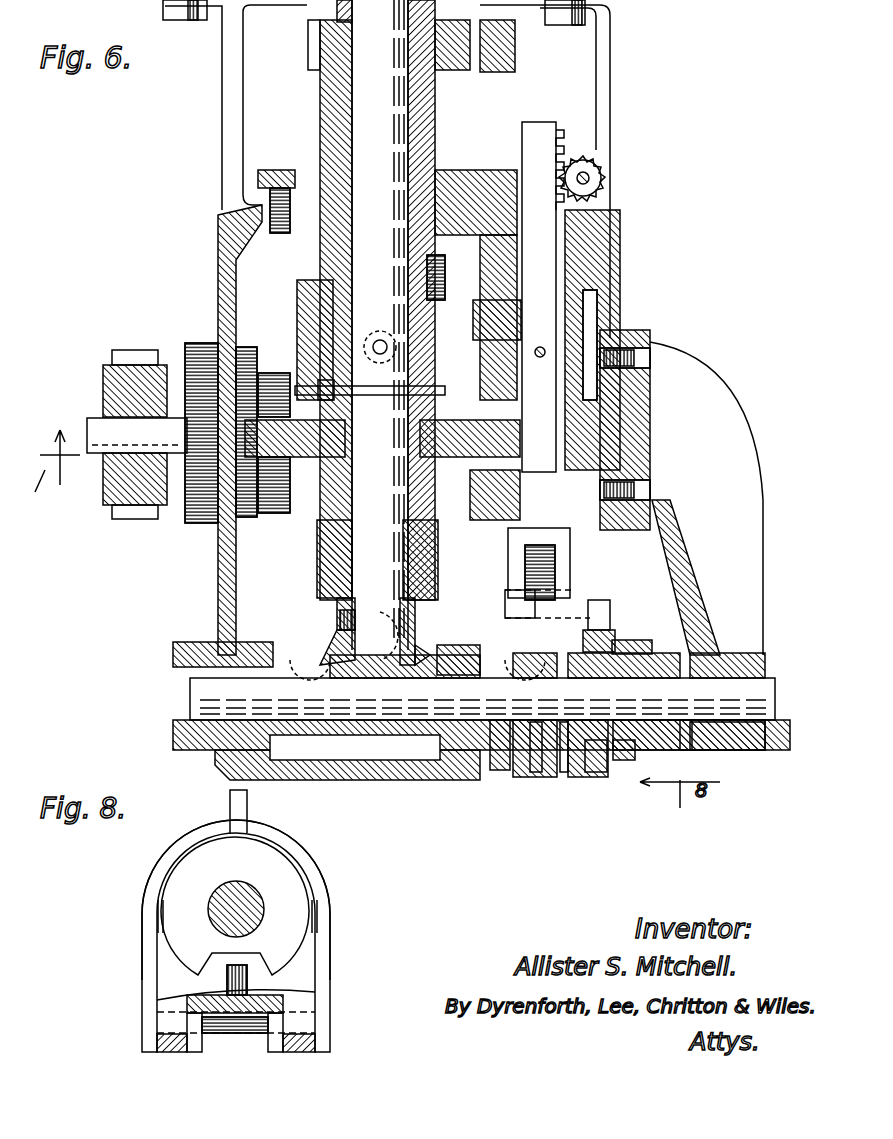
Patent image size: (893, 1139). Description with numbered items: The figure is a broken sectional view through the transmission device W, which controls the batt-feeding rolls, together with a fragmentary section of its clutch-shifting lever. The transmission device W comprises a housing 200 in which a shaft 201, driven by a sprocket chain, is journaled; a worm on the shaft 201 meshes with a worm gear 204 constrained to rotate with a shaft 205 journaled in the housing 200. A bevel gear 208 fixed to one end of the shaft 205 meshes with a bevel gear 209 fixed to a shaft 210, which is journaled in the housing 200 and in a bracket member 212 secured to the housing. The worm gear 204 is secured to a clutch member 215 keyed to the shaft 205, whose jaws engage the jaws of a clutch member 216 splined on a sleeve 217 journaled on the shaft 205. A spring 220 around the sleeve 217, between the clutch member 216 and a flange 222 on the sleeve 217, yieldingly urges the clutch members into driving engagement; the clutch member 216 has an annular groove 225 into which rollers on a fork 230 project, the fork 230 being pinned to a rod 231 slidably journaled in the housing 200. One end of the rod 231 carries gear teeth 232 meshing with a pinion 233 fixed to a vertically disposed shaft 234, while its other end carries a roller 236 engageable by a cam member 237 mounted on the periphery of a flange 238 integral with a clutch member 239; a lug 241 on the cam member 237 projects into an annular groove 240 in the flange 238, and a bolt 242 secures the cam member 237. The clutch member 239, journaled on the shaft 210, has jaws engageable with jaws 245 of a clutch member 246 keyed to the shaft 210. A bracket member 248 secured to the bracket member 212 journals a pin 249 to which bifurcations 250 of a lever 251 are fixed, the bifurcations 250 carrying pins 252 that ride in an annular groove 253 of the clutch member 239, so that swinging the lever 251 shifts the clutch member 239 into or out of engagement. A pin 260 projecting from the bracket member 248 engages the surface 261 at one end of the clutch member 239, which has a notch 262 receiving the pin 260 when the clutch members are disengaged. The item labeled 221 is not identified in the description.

In FIG. 6, the transmission device W is at (216, 248).
In FIG. 6, the housing 200 is at (612, 95).
In FIG. 6, the shaft 201 is at (100, 430).
In FIG. 6, the worm gear 204 is at (520, 436).
In FIG. 6, the shaft 205 is at (365, 568).
In FIG. 6, the bevel gear 208 is at (418, 640).
In FIG. 6, the bevel gear 209 is at (310, 745).
In FIG. 6, the shaft 210 is at (410, 702).
In FIG. 6, the bracket member 212 is at (770, 752).
In FIG. 6, the clutch member 215 is at (445, 395).
In FIG. 6, the clutch member 216 is at (313, 272).
In FIG. 6, the sleeve 217 is at (450, 135).
In FIG. 6, the spring 220 is at (320, 255).
In FIG. 6, the pin 221 is at (393, 336).
In FIG. 6, the flange 222 is at (435, 215).
In FIG. 6, the annular groove 225 is at (305, 345).
In FIG. 6, the fork 230 is at (505, 330).
In FIG. 6, the rod 231 is at (553, 330).
In FIG. 6, the gear teeth 232 is at (558, 165).
In FIG. 6, the pinion 233 is at (596, 165).
In FIG. 6, the shaft 234 is at (590, 180).
In FIG. 6, the roller 236 is at (545, 560).
In FIG. 6, the cam member 237 is at (565, 605).
In FIG. 6, the flange 238 is at (600, 770).
In FIG. 6, the clutch member 239 is at (632, 758).
In FIG. 8, the clutch member 239 is at (162, 865).
In FIG. 6, the annular groove 240 is at (315, 45).
In FIG. 6, the lug 241 is at (605, 612).
In FIG. 6, the bolt 242 is at (618, 645).
In FIG. 6, the jaws 245 is at (530, 775).
In FIG. 6, the clutch member 246 is at (500, 748).
In FIG. 8, the bracket member 248 is at (292, 1045).
In FIG. 8, the pin 249 is at (235, 1022).
In FIG. 8, the bifurcations 250 is at (325, 958).
In FIG. 8, the lever 251 is at (250, 800).
In FIG. 8, the pins 252 is at (160, 925).
In FIG. 6, the annular groove 253 is at (695, 752).
In FIG. 8, the pin 260 is at (318, 992).
In FIG. 6, the surface 261 is at (700, 660).
In FIG. 8, the surface 261 is at (292, 878).
In FIG. 8, the notch 262 is at (225, 956).